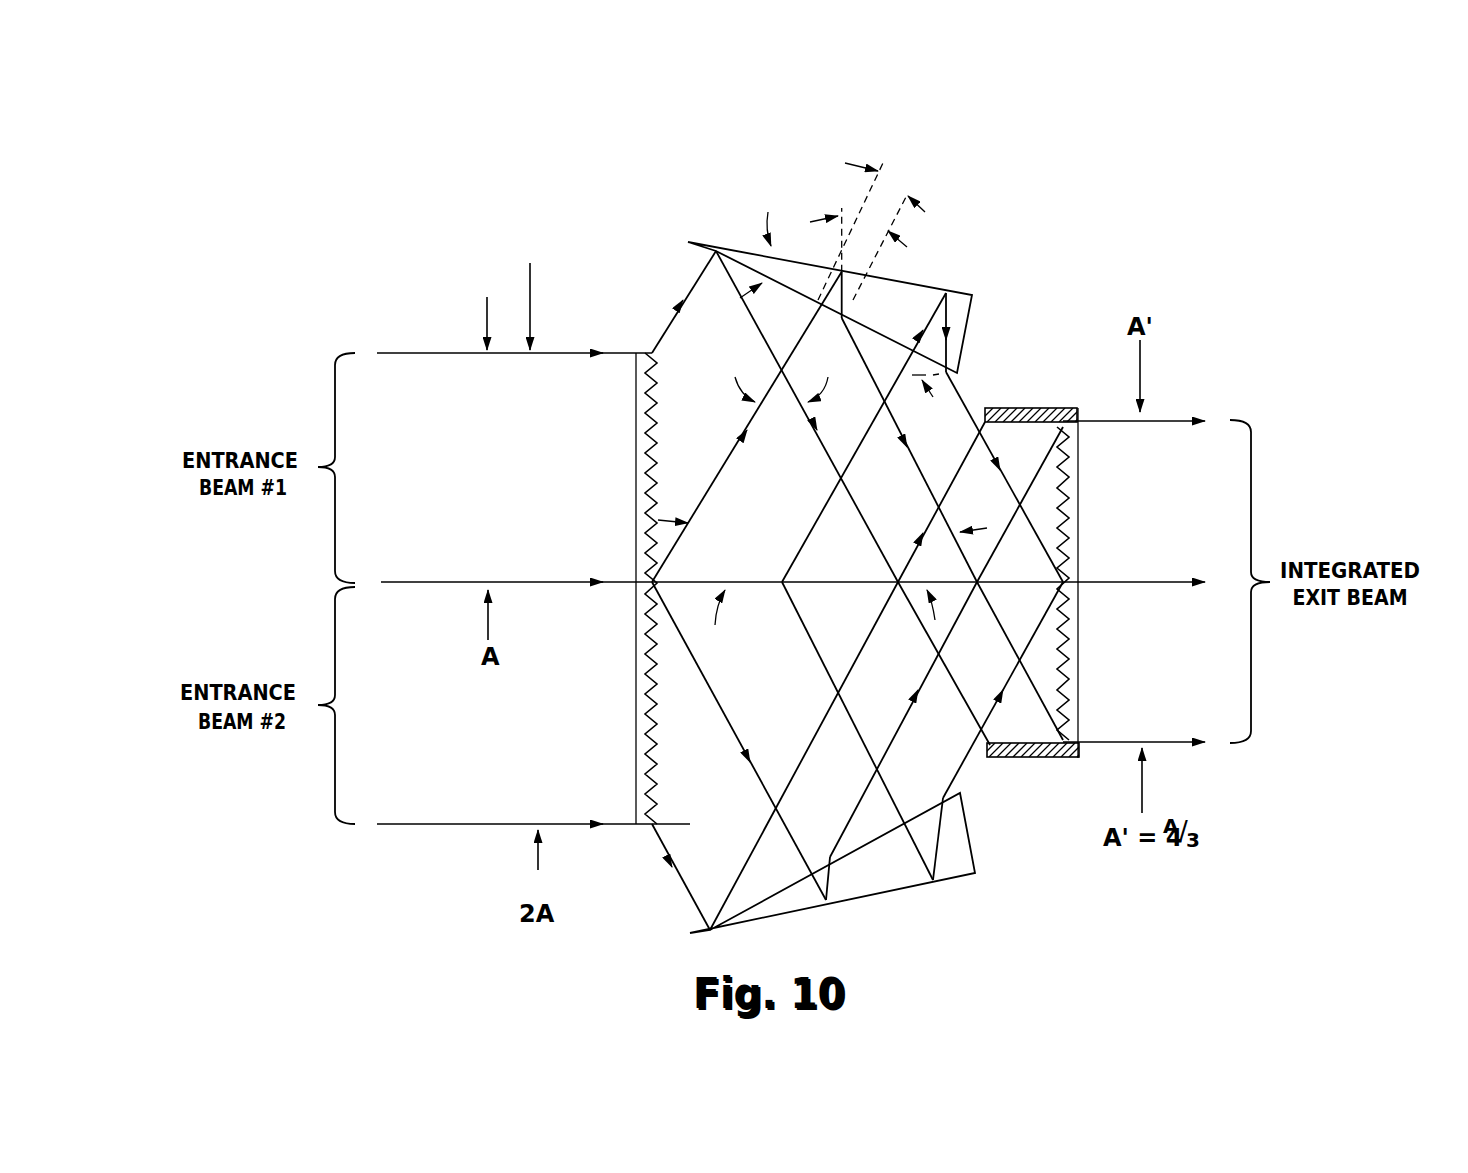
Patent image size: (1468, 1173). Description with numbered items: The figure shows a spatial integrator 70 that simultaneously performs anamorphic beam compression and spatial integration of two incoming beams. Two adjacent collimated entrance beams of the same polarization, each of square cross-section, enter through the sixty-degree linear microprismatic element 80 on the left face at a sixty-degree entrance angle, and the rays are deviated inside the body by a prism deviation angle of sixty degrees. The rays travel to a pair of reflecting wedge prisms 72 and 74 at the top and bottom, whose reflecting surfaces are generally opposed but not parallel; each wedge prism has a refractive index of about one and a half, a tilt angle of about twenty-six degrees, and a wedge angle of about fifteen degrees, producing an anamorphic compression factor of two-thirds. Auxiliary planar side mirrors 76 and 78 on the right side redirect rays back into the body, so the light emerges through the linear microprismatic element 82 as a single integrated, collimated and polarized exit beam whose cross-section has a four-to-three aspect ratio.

The spatial integrator 70 is at (638, 248).
The reflecting wedge prism 72 is at (903, 291).
The reflecting wedge prism 74 is at (866, 878).
The auxiliary planar side mirror 76 is at (1024, 407).
The auxiliary planar side mirror 78 is at (1024, 760).
The linear microprismatic element 80 is at (646, 680).
The linear microprismatic element 82 is at (1075, 538).